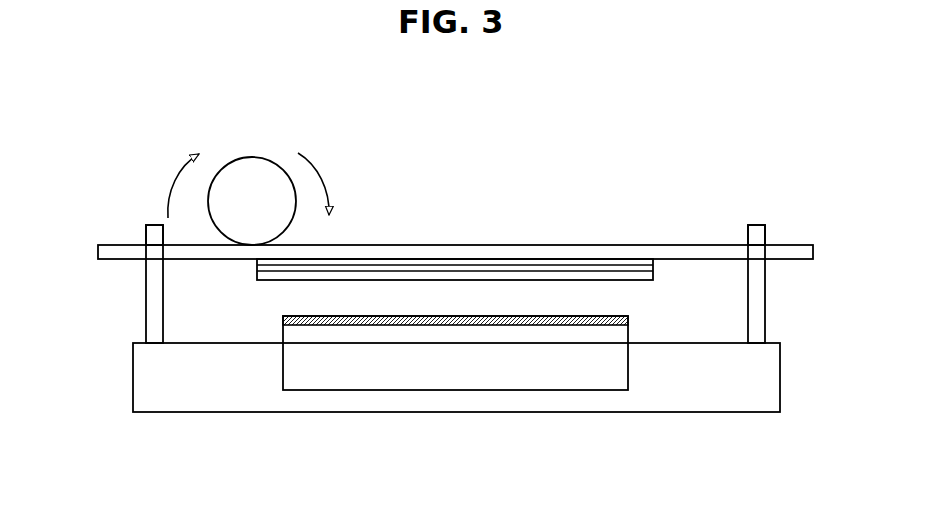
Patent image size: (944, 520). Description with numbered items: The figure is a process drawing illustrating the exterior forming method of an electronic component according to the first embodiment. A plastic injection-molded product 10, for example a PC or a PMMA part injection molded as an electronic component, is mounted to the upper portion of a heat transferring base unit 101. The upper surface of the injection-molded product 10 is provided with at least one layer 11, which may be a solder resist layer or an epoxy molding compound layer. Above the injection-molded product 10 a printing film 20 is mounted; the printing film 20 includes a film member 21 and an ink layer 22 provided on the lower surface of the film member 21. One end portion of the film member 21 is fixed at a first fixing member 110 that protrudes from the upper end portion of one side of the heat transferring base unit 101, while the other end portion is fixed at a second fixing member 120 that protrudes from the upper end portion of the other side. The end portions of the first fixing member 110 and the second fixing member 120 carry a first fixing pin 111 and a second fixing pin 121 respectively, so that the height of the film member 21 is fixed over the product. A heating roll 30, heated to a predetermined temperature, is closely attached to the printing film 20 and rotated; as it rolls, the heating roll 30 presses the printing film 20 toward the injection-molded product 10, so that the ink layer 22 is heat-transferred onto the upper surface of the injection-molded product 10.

The injection-molded product 10 is at (457, 378).
The layer 11 is at (284, 317).
The printing film 20 is at (455, 215).
The film member 21 is at (575, 253).
The ink layer 22 is at (513, 270).
The heating roll 30 is at (252, 157).
The heat transferring base unit 101 is at (773, 380).
The first fixing member 110 is at (151, 289).
The first fixing pin 111 is at (151, 232).
The second fixing member 120 is at (757, 305).
The second fixing pin 121 is at (757, 233).